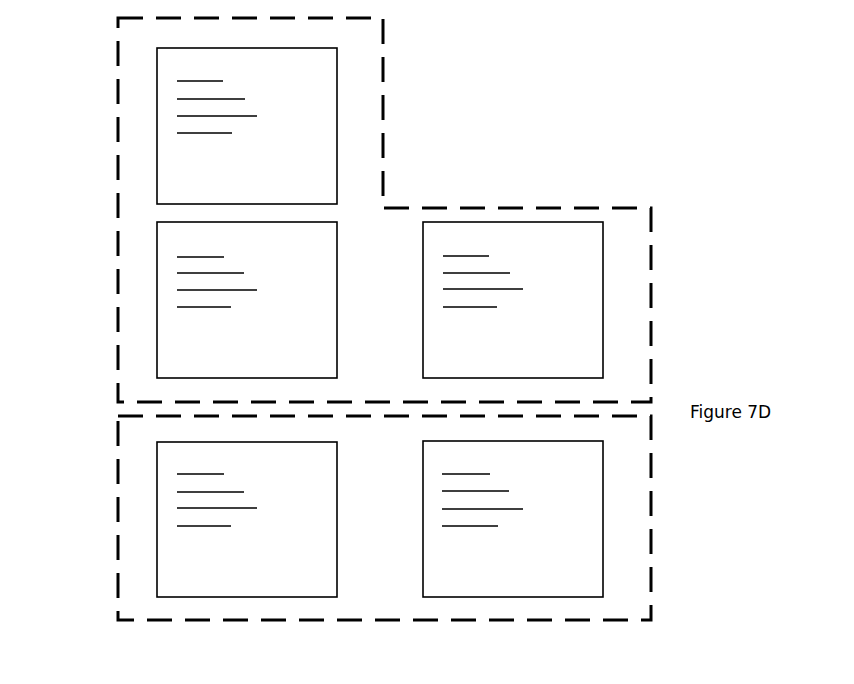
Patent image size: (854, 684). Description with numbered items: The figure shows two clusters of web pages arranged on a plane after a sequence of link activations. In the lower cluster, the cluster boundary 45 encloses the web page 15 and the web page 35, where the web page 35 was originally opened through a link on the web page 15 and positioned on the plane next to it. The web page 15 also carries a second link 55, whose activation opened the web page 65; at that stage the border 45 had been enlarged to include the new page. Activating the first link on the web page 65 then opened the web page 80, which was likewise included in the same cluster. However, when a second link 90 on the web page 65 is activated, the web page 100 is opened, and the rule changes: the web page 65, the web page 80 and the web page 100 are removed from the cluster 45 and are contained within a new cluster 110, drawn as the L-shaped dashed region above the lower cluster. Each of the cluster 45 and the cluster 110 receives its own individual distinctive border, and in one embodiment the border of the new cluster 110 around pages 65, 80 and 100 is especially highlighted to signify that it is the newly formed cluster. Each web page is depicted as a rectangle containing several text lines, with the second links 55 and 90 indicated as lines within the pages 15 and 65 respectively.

The new cluster 110 is at (670, 285).
The cluster boundary 45 is at (118, 467).
The web page 100 is at (157, 128).
The web page 65 is at (189, 302).
The second link 90 is at (200, 308).
The web page 80 is at (563, 222).
The web page 15 is at (192, 523).
The second link 55 is at (210, 527).
The web page 35 is at (603, 502).